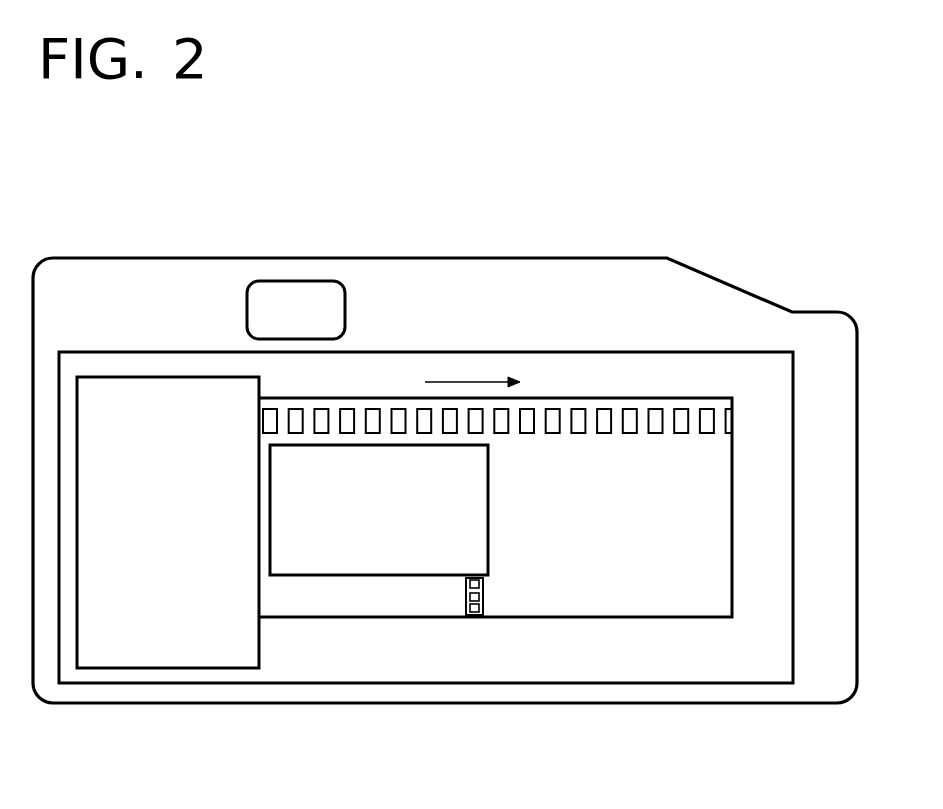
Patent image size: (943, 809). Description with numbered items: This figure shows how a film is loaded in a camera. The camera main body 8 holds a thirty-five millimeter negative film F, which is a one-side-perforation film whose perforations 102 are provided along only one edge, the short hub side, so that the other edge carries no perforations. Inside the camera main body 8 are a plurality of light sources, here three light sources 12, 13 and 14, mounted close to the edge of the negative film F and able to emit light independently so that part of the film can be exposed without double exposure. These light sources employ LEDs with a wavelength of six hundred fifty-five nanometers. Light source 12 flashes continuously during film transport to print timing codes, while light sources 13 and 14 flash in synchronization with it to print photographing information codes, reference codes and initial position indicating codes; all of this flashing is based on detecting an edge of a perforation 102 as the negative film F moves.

The camera main body 8 is at (689, 290).
The perforations 102 is at (398, 420).
The negative film F is at (305, 603).
The light source 12 is at (483, 608).
The light source 13 is at (466, 598).
The light source 14 is at (485, 585).